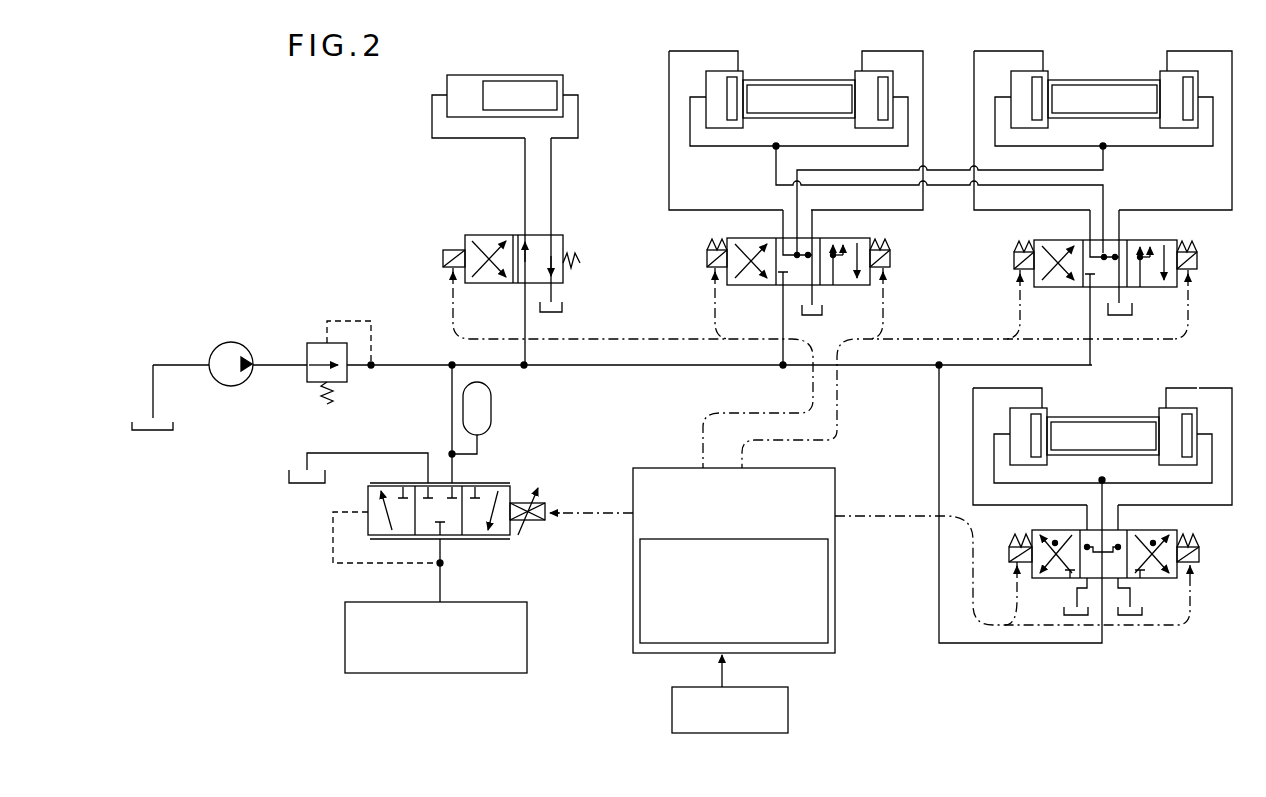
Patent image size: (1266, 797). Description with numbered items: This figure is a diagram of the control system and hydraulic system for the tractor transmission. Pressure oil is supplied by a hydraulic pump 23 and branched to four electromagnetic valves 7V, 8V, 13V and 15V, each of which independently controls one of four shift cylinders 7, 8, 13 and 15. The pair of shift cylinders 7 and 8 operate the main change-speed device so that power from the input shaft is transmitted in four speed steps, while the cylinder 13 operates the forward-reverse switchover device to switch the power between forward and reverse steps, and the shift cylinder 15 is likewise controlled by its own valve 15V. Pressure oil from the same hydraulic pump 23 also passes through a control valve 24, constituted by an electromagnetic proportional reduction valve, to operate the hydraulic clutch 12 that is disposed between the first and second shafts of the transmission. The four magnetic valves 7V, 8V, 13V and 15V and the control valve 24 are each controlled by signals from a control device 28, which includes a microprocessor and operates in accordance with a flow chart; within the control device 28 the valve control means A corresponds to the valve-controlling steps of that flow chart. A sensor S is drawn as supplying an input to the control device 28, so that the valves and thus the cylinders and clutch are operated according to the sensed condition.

The shift cylinder 7 is at (810, 77).
The electromagnetic valve 7V is at (870, 238).
The shift cylinder 8 is at (1113, 78).
The electromagnetic valve 8V is at (1177, 240).
The hydraulic clutch 12 is at (345, 623).
The cylinder 13 is at (1118, 410).
The electromagnetic valve 13V is at (1177, 530).
The shift cylinder 15 is at (498, 75).
The electromagnetic valve 15V is at (563, 237).
The hydraulic pump 23 is at (237, 342).
The control valve 24 is at (512, 486).
The control device 28 is at (835, 580).
The valve control means A is at (828, 630).
The sensor S is at (672, 706).